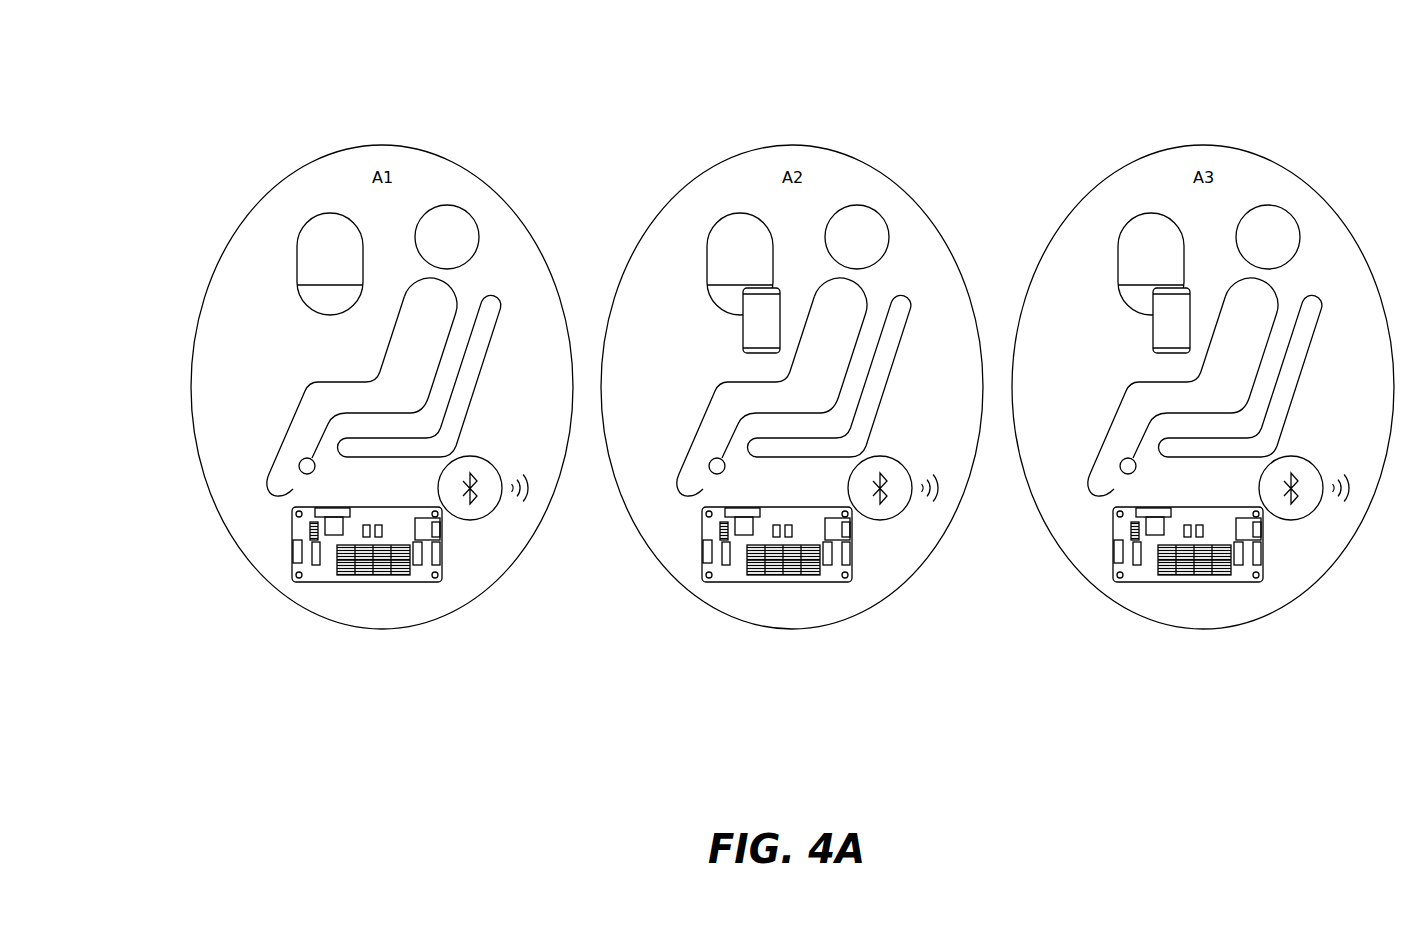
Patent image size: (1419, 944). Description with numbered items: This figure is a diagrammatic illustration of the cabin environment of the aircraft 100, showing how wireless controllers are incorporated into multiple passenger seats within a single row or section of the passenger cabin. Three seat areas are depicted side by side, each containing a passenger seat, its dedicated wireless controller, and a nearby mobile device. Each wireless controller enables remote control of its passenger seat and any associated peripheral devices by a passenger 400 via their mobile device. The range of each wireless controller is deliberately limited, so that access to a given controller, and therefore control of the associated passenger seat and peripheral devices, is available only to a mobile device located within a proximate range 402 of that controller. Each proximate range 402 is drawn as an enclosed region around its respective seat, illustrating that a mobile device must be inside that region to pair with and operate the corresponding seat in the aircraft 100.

The aircraft 100 is at (238, 70).
The passenger 400 is at (843, 285).
The proximate range 402 is at (792, 344).